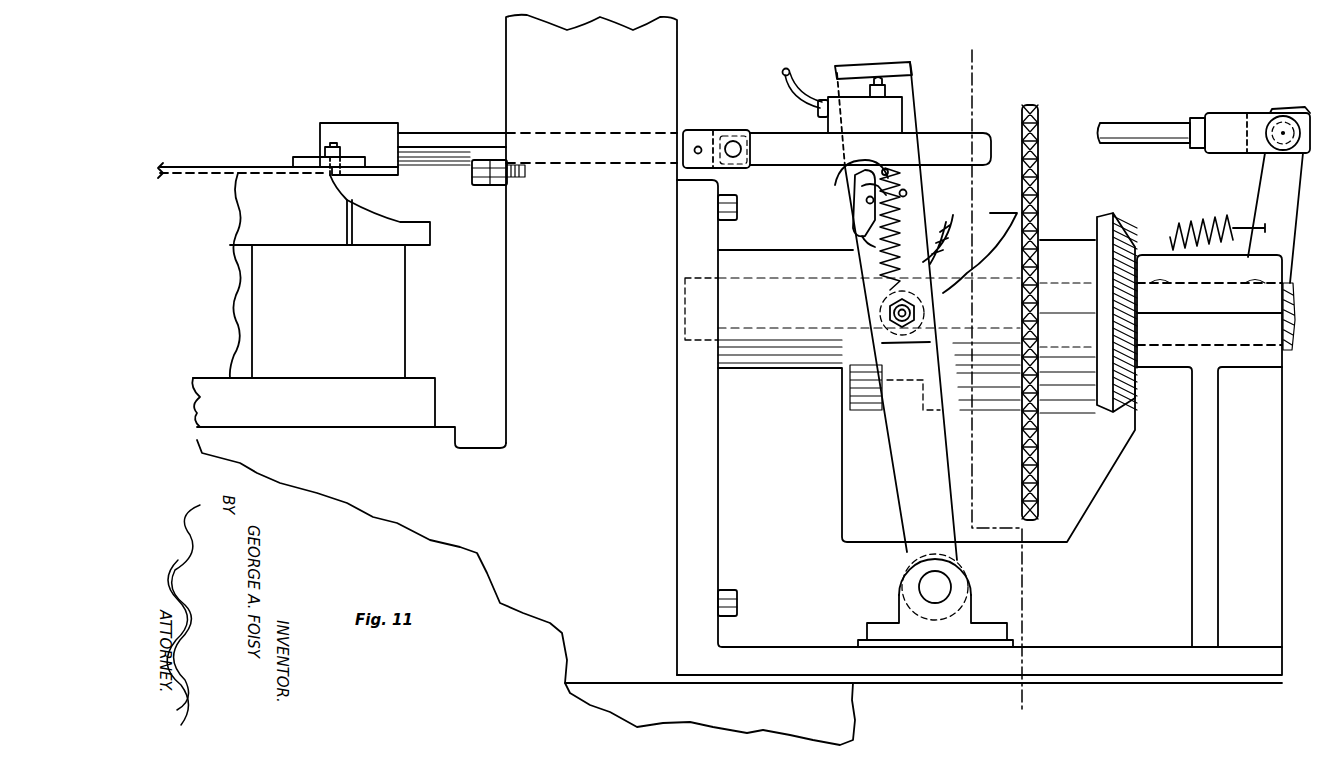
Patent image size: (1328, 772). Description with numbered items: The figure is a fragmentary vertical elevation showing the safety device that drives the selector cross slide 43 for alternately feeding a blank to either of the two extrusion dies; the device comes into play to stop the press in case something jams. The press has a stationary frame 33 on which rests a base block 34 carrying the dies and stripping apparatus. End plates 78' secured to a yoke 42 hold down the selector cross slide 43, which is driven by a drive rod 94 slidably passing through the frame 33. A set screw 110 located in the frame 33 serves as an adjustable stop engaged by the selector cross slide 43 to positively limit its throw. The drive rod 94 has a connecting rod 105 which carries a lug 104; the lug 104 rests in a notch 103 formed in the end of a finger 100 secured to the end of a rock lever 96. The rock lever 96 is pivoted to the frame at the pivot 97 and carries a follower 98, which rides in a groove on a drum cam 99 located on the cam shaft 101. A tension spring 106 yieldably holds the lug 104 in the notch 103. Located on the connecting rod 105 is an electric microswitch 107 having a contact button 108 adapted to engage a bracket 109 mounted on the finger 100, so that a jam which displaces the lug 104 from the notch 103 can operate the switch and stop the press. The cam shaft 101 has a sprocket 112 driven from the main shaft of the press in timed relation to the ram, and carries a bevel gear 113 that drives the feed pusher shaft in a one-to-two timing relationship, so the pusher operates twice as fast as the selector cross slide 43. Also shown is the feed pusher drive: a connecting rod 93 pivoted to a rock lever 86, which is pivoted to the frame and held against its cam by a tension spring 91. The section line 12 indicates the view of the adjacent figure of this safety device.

The section line 12— 12 is at (983, 54).
The stationary frame 33 is at (515, 41).
The base block 34 is at (402, 303).
The yoke 42 is at (256, 203).
The selector cross slide 43 is at (199, 167).
The end plates 78' is at (317, 147).
The rock lever 86 is at (1272, 178).
The tension spring 91 is at (1218, 218).
The connecting rod 93 is at (1127, 128).
The drive rod 94 is at (440, 133).
The rock lever 96 is at (905, 446).
The pivot 97 is at (928, 587).
The follower 98 is at (880, 293).
The drum cam 99 is at (998, 220).
The finger 100 is at (858, 214).
The cam shaft 101 is at (783, 280).
The notch 103 is at (867, 188).
The lug 104 is at (850, 174).
The connecting rod 105 is at (785, 156).
The tension spring 106 is at (868, 244).
The electric microswitch 107 is at (905, 112).
The contact button 108 is at (895, 82).
The bracket 109 is at (895, 65).
The set screw 110 is at (477, 175).
The sprocket 112 is at (1040, 116).
The bevel gear 113 is at (1120, 215).